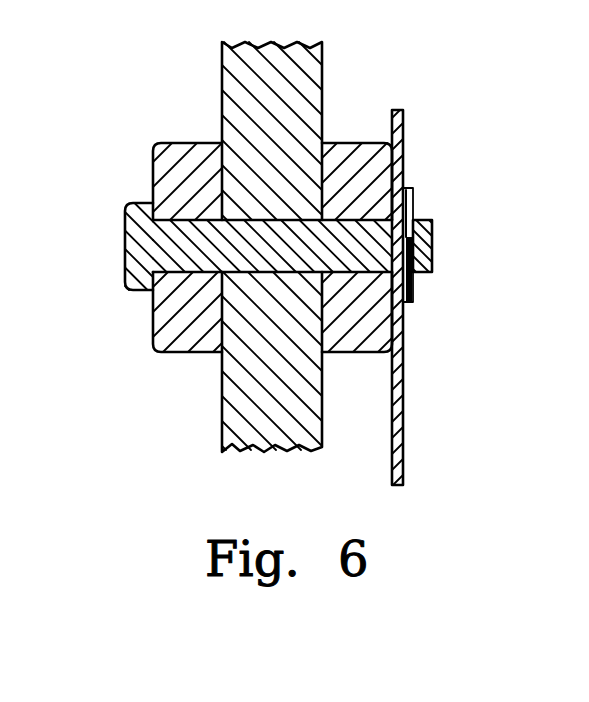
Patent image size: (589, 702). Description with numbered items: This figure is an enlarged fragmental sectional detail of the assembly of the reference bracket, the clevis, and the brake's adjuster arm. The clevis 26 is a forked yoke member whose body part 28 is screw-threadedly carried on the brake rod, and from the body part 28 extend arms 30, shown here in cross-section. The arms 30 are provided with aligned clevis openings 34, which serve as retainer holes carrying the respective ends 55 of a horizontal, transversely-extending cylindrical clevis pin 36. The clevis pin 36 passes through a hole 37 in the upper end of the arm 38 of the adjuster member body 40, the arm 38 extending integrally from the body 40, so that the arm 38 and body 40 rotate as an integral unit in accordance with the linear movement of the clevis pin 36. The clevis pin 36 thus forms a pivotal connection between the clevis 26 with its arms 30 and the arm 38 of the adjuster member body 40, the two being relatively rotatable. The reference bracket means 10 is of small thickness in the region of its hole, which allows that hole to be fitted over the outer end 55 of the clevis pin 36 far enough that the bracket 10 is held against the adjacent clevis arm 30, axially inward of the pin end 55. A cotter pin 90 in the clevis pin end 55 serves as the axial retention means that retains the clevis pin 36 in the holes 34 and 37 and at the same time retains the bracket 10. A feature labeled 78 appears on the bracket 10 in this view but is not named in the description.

The reference bracket means 10 is at (426, 297).
The clevis 26 is at (272, 314).
The body part 28 is at (160, 334).
The arms 30 is at (272, 314).
The clevis openings 34 is at (158, 152).
The clevis pin 36 is at (282, 275).
The hole 37 is at (245, 221).
The arm 38 is at (212, 247).
The adjuster member body 40 is at (233, 422).
The ends of the clevis pin 55 is at (126, 243).
The plate surface 78 is at (404, 403).
The cotter pin 90 is at (410, 197).